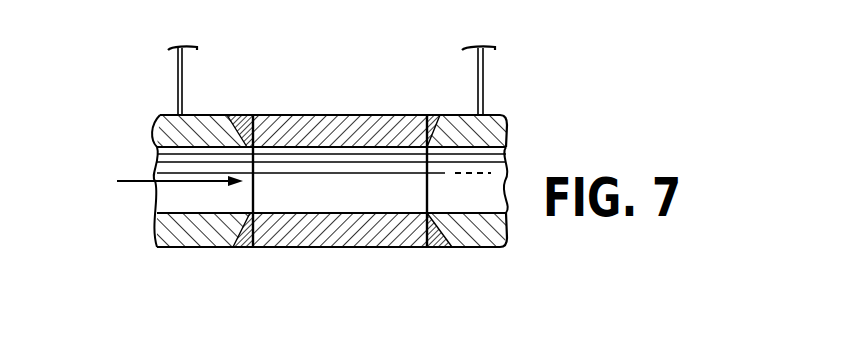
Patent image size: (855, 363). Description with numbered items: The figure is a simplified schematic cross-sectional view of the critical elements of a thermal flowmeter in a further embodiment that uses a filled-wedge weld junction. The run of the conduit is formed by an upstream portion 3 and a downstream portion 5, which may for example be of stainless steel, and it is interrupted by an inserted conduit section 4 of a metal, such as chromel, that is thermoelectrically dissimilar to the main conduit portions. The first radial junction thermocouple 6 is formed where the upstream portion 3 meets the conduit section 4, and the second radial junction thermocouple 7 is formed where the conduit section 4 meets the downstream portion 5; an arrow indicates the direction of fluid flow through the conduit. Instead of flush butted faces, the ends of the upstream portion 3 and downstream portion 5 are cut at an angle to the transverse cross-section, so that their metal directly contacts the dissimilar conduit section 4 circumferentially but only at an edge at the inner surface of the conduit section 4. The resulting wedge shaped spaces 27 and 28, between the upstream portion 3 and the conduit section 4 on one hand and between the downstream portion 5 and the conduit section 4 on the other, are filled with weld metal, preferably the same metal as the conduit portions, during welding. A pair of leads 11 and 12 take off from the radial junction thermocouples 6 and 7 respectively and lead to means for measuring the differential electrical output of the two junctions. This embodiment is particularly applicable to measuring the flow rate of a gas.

The upstream portion of the conduit 3 is at (162, 112).
The lead 11 is at (183, 79).
The first radial junction thermocouple 6 is at (253, 113).
The inserted conduit section 4 is at (347, 113).
The second radial junction thermocouple 7 is at (428, 113).
The lead 12 is at (484, 88).
The downstream portion of the conduit 5 is at (507, 113).
The wedge shaped space 27 is at (238, 248).
The wedge shaped space 28 is at (433, 248).